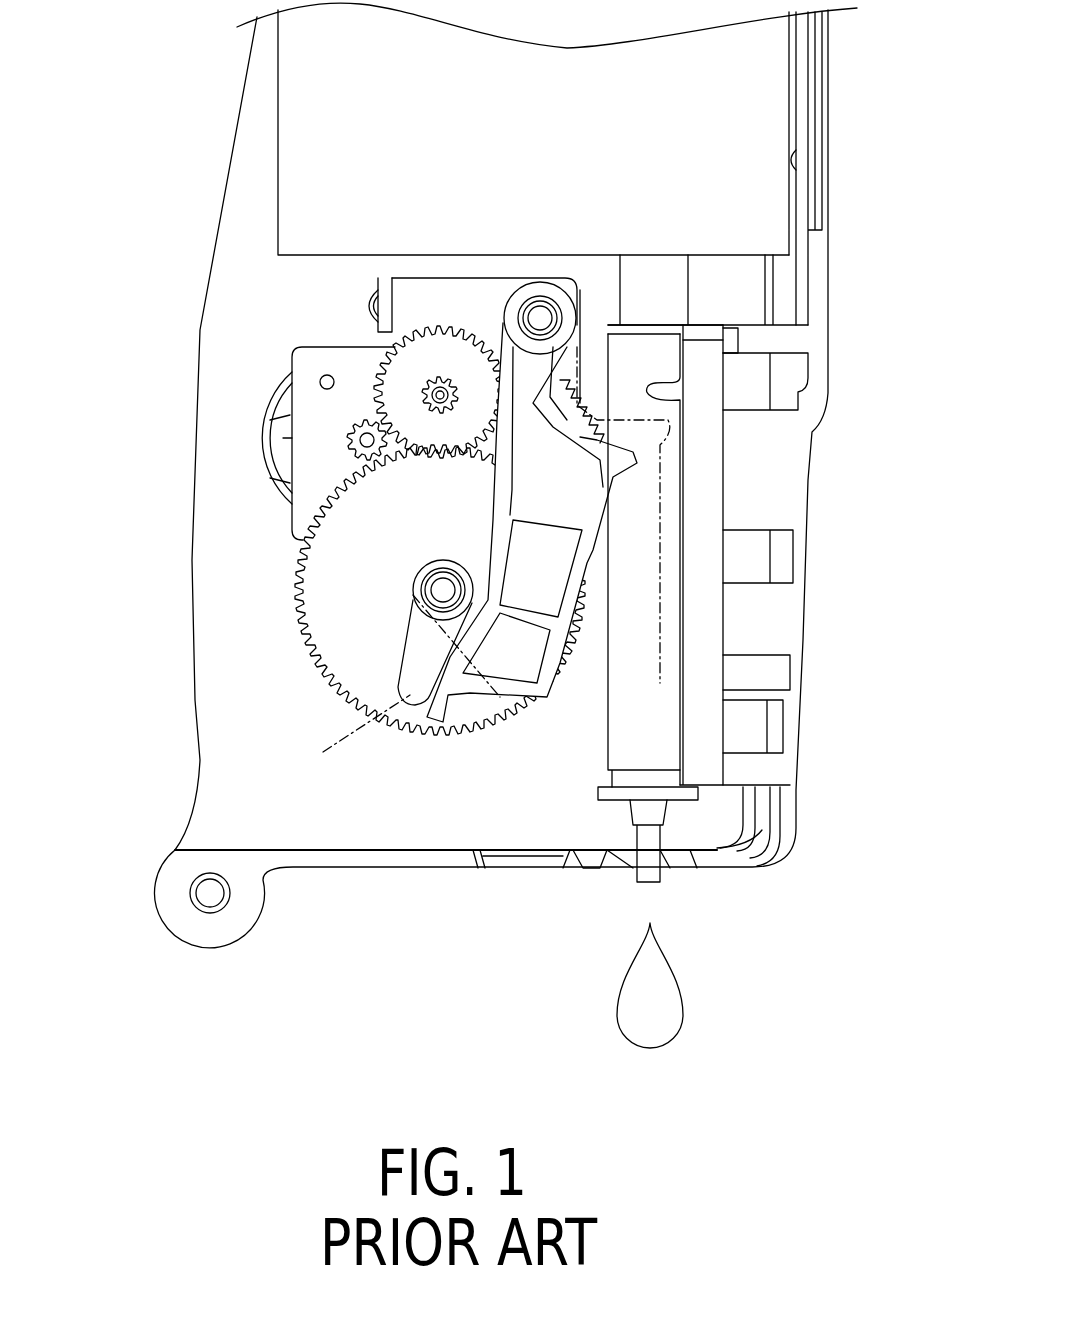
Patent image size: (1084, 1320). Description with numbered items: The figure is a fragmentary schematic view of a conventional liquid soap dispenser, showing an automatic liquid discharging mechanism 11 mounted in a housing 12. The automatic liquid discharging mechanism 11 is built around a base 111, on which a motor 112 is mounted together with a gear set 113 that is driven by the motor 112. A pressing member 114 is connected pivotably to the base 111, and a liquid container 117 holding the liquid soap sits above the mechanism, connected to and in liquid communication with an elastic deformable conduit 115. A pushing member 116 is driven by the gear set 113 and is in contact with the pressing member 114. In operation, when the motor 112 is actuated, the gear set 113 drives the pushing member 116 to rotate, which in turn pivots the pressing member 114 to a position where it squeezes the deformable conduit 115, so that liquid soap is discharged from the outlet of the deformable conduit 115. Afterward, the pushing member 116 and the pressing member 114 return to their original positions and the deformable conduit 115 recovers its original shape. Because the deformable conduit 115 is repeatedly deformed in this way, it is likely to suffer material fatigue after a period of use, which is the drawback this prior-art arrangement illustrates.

The automatic liquid discharging mechanism 11 is at (440, 778).
The housing 12 is at (828, 107).
The base 111 is at (468, 293).
The motor 112 is at (270, 397).
The gear set 113 is at (297, 623).
The pressing member 114 is at (583, 555).
The elastic deformable conduit 115 is at (623, 727).
The pushing member 116 is at (397, 657).
The liquid container 117 is at (330, 65).